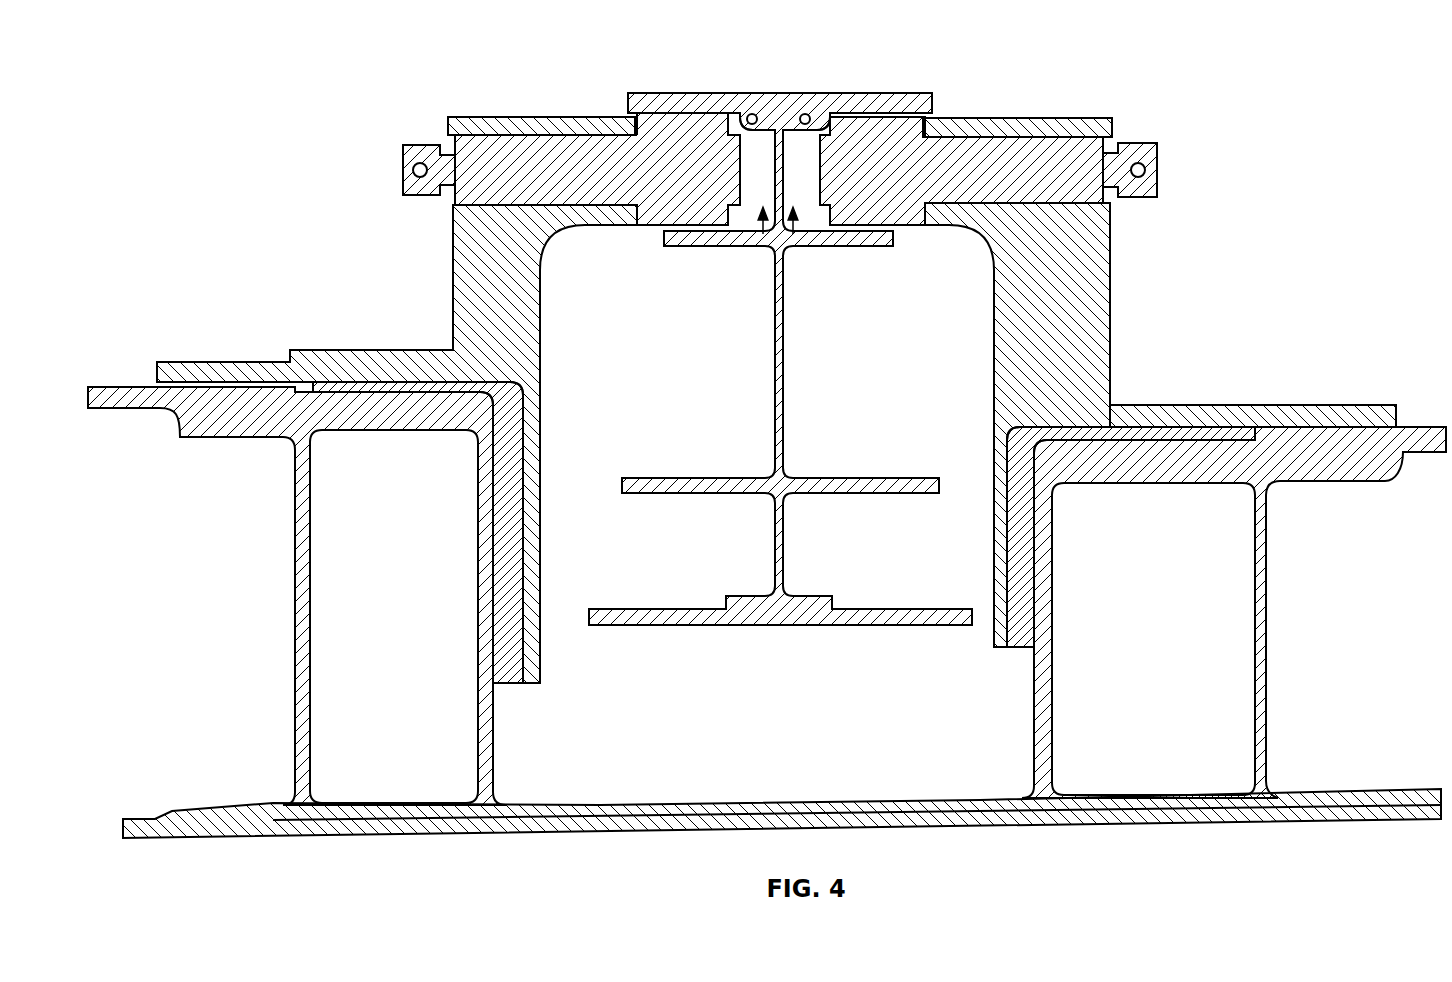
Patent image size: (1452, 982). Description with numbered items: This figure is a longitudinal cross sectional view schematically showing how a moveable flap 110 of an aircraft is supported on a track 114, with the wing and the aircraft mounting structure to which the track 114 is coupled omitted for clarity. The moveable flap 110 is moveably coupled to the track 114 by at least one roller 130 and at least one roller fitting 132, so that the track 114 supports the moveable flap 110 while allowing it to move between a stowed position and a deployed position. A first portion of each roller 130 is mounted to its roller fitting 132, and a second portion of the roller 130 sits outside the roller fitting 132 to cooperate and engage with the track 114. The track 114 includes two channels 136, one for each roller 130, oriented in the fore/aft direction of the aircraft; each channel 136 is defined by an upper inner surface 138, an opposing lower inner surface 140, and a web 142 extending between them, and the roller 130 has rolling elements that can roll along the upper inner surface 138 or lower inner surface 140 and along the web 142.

The moveable flap 110 is at (212, 587).
The track 114 is at (898, 93).
The roller 130 is at (428, 196).
The roller fitting 132 is at (535, 117).
The channel 136 is at (793, 235).
The upper inner surface 138 is at (810, 116).
The lower inner surface 140 is at (728, 220).
The web 142 is at (806, 116).